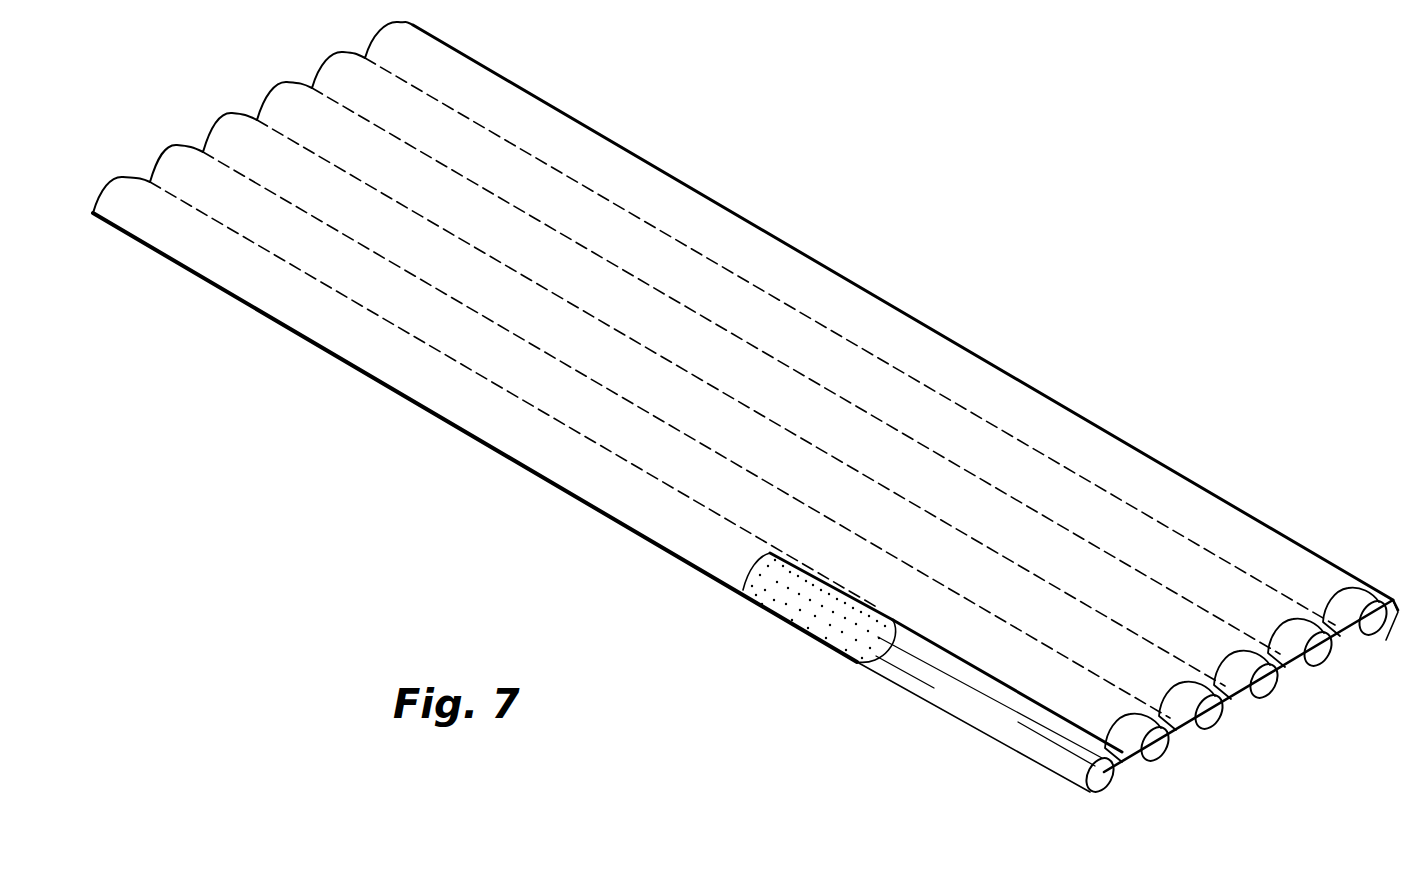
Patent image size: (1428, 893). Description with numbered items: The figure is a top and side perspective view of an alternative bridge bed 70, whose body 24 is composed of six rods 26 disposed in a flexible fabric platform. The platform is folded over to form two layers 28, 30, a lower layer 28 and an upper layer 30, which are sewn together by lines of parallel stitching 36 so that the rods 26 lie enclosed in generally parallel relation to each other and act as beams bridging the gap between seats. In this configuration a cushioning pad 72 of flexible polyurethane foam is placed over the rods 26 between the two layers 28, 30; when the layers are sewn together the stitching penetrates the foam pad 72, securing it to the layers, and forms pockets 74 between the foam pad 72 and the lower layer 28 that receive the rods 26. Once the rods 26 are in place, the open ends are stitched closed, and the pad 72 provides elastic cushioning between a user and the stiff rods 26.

The bridge bed 70 is at (760, 431).
The body 24 is at (248, 310).
The upper layer 30 is at (1186, 483).
The parallel stitching 36 is at (541, 157).
The cushioning pad 72 is at (792, 622).
The rods 26 is at (1112, 790).
The lower layer 28 is at (1022, 766).
The pockets 74 is at (1386, 620).